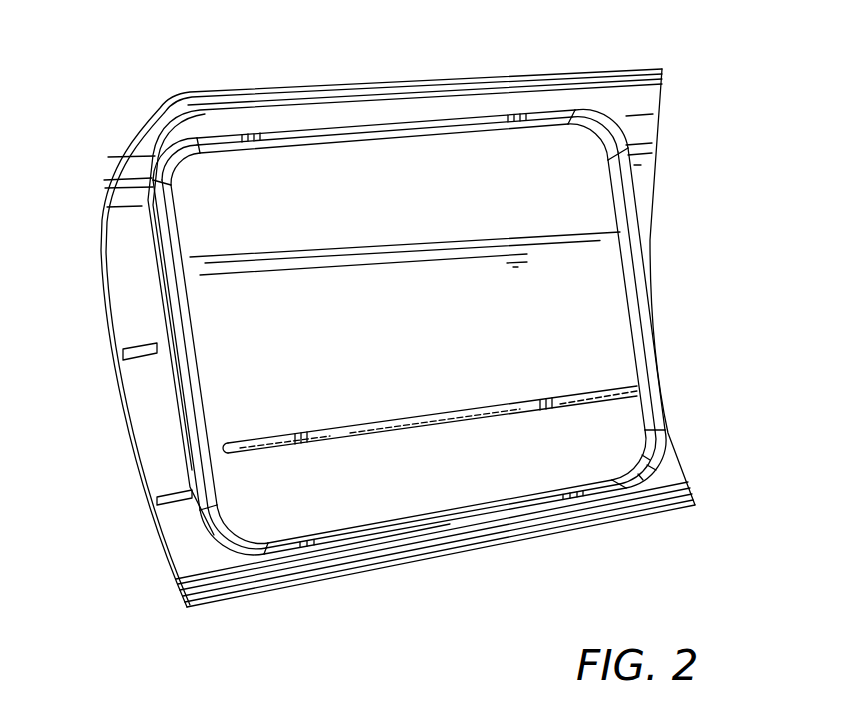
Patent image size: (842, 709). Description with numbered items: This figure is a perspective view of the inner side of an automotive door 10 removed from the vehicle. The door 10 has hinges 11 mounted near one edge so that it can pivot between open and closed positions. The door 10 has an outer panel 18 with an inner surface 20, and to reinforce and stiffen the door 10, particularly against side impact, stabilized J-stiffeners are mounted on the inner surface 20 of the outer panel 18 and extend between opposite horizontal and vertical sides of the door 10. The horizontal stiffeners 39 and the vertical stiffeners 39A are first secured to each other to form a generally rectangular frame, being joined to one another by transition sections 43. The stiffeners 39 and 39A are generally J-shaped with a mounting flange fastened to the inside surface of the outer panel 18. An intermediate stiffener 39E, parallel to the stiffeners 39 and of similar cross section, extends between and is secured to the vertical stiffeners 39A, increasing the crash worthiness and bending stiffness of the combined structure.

The door 10 is at (412, 66).
The hinges 11 is at (138, 347).
The outer panel 18 is at (603, 258).
The inner surface 20 is at (418, 317).
The stiffeners 39 is at (506, 112).
The stiffeners 39A is at (177, 254).
The intermediate stiffener 39E is at (448, 412).
The transition sections 43 is at (186, 152).